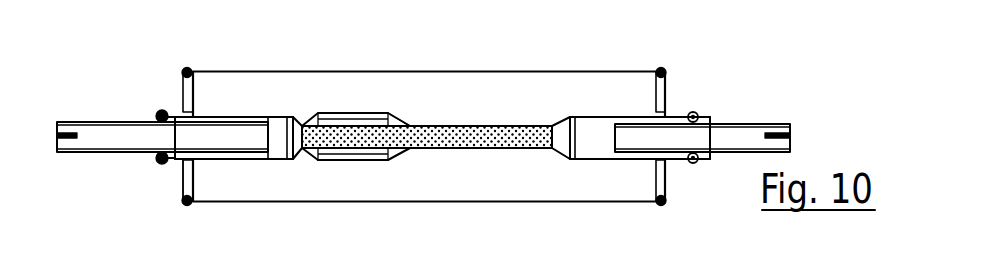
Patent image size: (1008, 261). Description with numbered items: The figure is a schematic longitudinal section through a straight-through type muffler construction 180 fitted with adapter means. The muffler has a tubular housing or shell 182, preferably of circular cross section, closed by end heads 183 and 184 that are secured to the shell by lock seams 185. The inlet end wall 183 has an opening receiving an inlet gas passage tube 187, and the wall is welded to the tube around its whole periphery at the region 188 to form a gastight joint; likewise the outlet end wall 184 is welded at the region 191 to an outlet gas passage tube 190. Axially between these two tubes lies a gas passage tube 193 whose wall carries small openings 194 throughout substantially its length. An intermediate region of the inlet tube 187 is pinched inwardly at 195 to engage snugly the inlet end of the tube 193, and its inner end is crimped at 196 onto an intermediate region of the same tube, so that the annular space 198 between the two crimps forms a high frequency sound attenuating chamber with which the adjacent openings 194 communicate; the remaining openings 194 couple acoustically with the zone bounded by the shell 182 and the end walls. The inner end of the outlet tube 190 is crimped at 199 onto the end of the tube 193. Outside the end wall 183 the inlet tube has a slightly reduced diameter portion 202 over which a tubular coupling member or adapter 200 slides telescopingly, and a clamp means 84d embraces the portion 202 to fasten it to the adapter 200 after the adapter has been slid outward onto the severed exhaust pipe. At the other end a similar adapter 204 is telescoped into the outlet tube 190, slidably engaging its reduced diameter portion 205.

The muffler construction 180 is at (313, 70).
The tubular housing or shell 182 is at (220, 72).
The end wall or end head 183 is at (182, 100).
The end wall or end head 184 is at (697, 46).
The lock seams 185 is at (189, 67).
The inlet gas passage means or tube 187 is at (248, 117).
The weld region 188 is at (184, 166).
The outlet gas passage means or tube 190 is at (603, 96).
The weld region 191 is at (666, 164).
The gas passage means or tube 193 is at (484, 126).
The small openings or outlets 194 is at (338, 142).
The pinched or crimped region 195 is at (302, 123).
The pinched or crimped region 196 is at (405, 151).
The annular space 198 is at (368, 120).
The pinched or crimped region 199 is at (554, 123).
The tubular coupling member or adapter 200 is at (62, 121).
The reduced diameter portion 202 is at (173, 116).
The tubular coupling member or adapter 204 is at (787, 124).
The reduced diameter portion 205 is at (703, 116).
The clamp means 84d is at (156, 113).